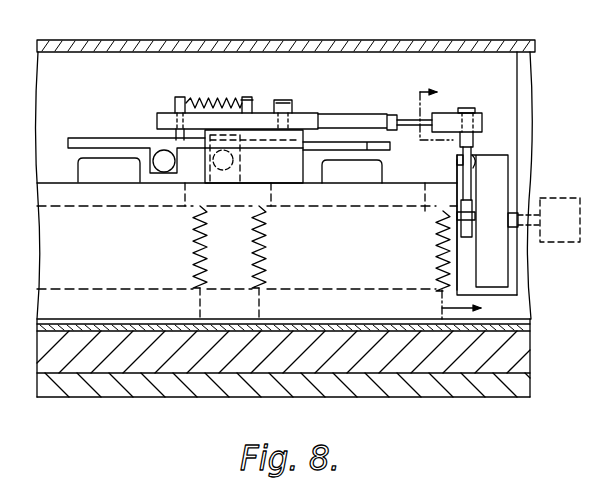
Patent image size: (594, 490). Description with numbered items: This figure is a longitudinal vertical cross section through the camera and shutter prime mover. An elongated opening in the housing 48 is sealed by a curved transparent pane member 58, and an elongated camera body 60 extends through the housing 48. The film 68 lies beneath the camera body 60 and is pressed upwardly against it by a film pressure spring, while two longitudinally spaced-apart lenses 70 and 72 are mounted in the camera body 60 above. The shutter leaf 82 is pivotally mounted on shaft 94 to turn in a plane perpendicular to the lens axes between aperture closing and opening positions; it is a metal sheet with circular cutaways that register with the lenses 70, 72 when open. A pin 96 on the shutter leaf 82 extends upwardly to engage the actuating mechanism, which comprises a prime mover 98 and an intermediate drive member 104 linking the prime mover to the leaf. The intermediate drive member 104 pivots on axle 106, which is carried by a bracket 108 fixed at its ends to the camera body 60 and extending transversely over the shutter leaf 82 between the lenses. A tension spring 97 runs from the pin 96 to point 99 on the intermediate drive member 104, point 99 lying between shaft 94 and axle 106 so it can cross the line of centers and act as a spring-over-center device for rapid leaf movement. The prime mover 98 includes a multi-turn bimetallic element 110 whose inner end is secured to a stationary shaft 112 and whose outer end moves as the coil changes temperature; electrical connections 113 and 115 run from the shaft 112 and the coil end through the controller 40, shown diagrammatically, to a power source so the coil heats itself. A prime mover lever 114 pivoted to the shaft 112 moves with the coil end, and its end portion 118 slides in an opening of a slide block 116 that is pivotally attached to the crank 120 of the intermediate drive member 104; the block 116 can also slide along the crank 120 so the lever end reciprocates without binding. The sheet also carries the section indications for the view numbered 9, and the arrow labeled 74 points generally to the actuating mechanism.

The transparent pane member 58 is at (359, 41).
The actuating arm assembly 74 is at (248, 98).
The pin 96 is at (178, 97).
The tension spring 97 is at (213, 101).
The spring attachment point 99 is at (253, 96).
The axle 106 is at (284, 99).
The intermediate drive member 104 is at (302, 116).
The shutter leaf 82 is at (118, 137).
The shaft 94 is at (240, 165).
The lens 70 is at (97, 173).
The lens 72 is at (371, 176).
The bracket 108 is at (291, 187).
The film 68 is at (352, 314).
The camera body 60 is at (137, 303).
The housing 48 is at (457, 398).
The crank 120 is at (408, 118).
The slide block 116 is at (448, 112).
The lever end portion 118 is at (471, 109).
The electrical connection 115 is at (473, 156).
The prime mover lever 114 is at (458, 170).
The prime mover 98 is at (503, 145).
The bimetallic element 110 is at (468, 259).
The stationary shaft 112 is at (468, 220).
The electrical connection 113 is at (512, 223).
The controller 40 is at (571, 198).
The section line 9- 9 is at (459, 193).